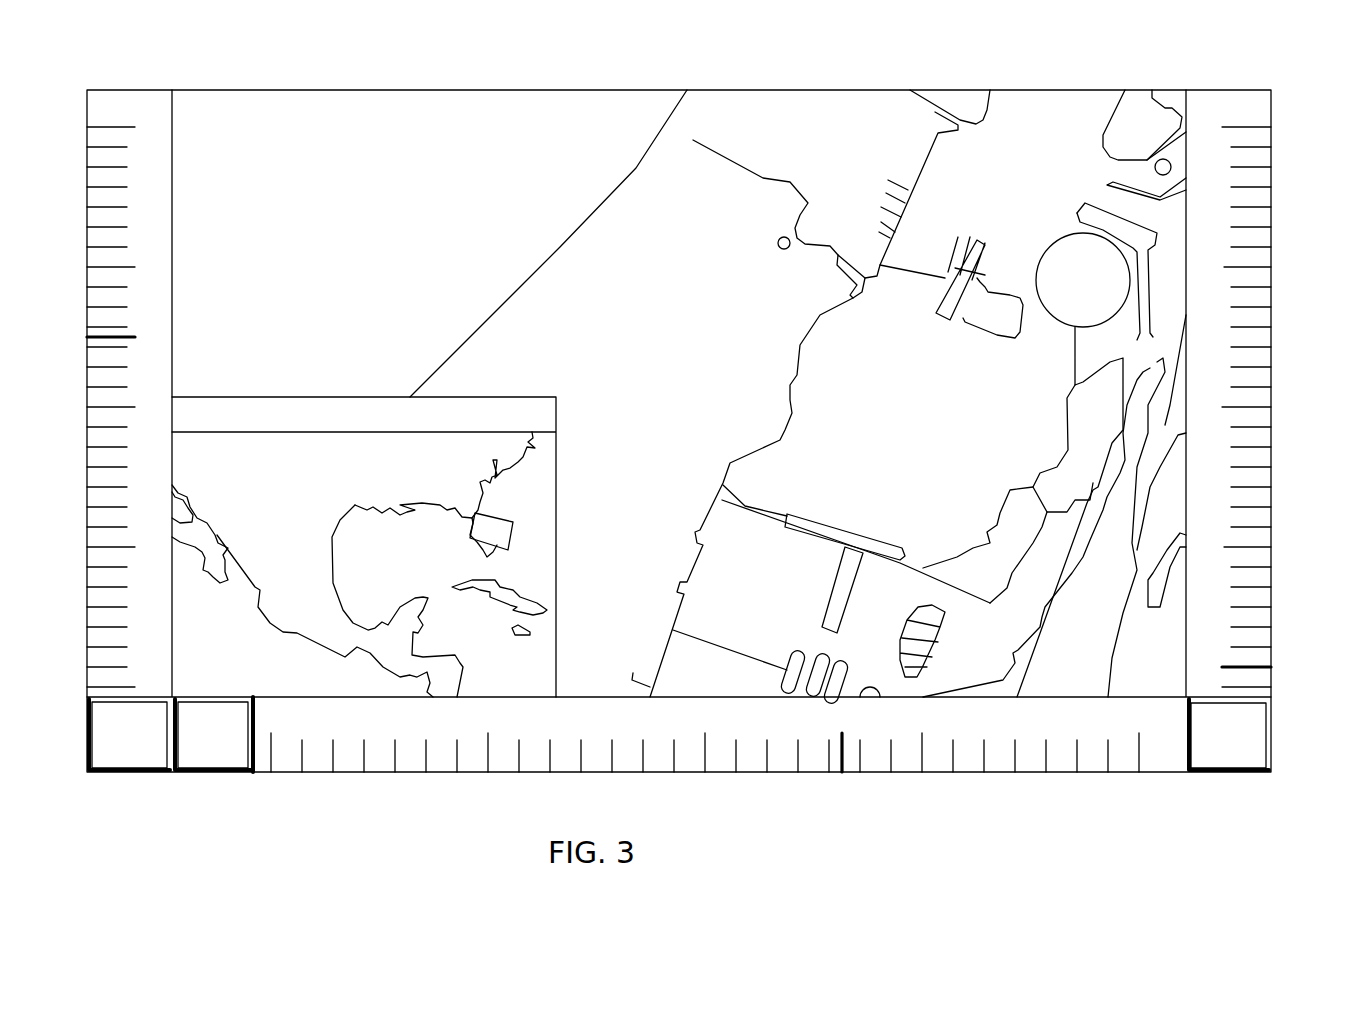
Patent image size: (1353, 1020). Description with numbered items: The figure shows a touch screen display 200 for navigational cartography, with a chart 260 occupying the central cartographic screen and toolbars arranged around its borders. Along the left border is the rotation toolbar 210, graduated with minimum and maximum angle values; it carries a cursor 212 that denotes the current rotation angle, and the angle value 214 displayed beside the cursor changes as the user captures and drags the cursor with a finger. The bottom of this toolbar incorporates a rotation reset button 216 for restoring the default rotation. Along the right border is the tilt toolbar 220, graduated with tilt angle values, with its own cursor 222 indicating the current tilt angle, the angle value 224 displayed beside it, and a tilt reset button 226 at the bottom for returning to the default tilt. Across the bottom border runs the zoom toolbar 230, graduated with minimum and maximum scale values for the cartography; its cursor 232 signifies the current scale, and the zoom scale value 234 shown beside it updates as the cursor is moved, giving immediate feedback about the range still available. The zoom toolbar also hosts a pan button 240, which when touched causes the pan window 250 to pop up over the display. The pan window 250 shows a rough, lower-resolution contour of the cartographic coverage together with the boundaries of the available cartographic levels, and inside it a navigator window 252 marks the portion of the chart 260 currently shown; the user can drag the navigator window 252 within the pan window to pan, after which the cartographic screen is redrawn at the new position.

The display 200 is at (1065, 89).
The rotation toolbar 210 is at (143, 397).
The cursor 212 is at (133, 338).
The angle value 214 is at (163, 338).
The rotation reset button 216 is at (123, 763).
The tilt toolbar 220 is at (1272, 397).
The cursor 222 is at (1271, 667).
The angle value 224 is at (1212, 650).
The tilt reset button 226 is at (1230, 762).
The zoom toolbar 230 is at (707, 772).
The cursor 232 is at (841, 772).
The zoom scale value 234 is at (812, 722).
The pan button 240 is at (215, 763).
The pan window 250 is at (386, 517).
The navigator window 252 is at (513, 522).
The chart 260 is at (585, 128).